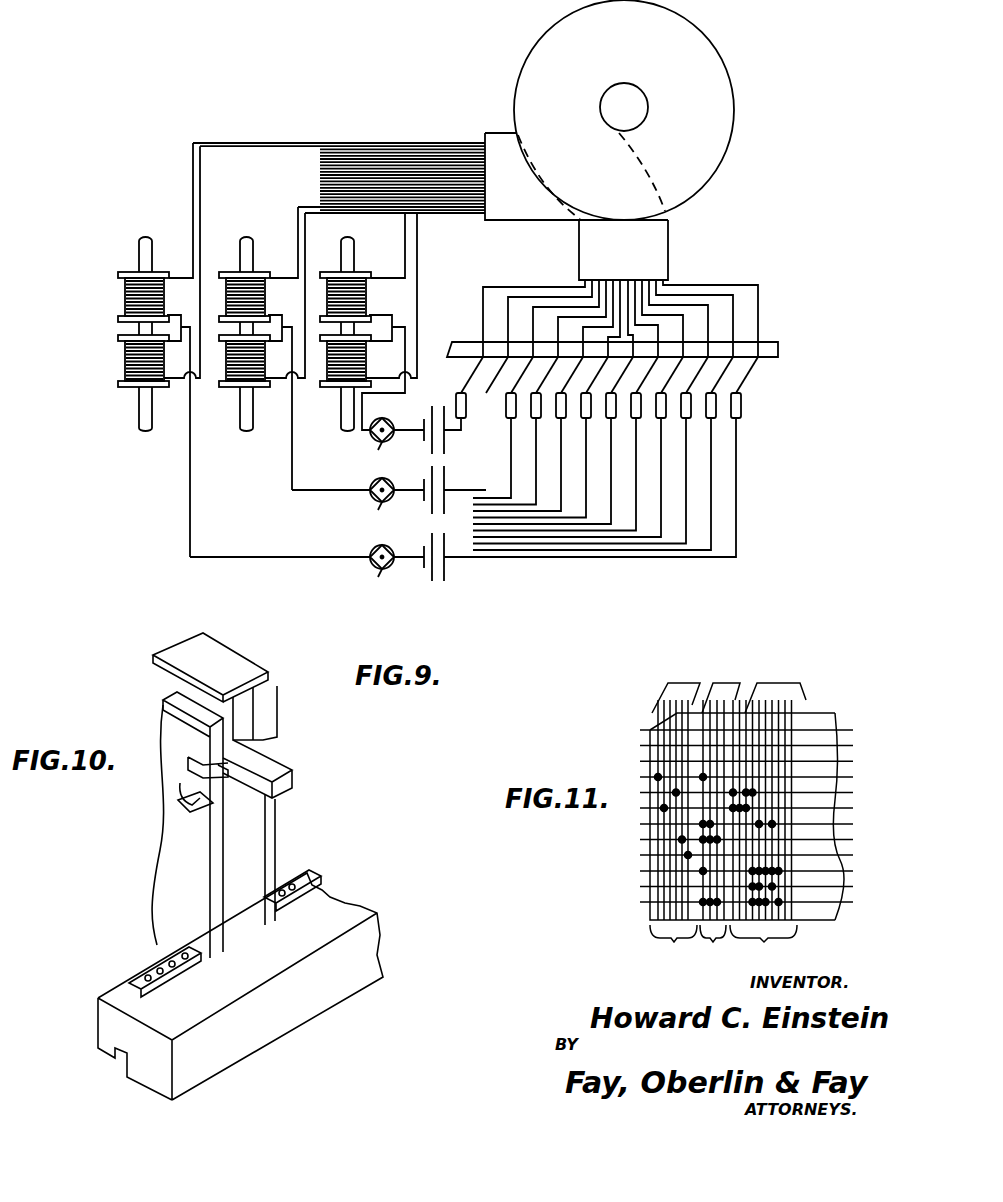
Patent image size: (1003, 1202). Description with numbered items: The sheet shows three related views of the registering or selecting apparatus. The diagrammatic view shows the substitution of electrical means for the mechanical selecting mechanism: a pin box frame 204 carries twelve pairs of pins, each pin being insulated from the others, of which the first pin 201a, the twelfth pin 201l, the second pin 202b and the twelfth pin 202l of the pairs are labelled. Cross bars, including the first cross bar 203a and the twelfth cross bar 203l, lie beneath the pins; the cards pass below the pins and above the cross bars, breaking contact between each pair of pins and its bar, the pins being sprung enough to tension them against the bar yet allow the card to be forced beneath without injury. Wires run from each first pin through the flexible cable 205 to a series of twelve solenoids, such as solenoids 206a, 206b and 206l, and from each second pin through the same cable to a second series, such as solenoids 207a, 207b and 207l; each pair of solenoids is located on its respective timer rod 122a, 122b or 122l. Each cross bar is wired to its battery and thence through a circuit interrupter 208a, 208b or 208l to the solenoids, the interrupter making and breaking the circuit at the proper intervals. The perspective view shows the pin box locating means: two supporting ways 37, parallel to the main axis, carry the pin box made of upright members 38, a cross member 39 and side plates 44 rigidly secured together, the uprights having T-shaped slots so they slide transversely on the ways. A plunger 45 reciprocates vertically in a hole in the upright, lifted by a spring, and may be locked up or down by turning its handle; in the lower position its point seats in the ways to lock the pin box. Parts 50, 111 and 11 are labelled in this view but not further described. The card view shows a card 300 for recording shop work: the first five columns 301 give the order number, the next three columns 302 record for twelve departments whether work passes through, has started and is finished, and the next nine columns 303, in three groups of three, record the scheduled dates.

In FIG. 9, the flexible cable 205 is at (668, 220).
In FIG. 9, the pin box frame 204 is at (778, 350).
In FIG. 9, the pin 201a is at (470, 374).
In FIG. 9, the pin 201l is at (742, 381).
In FIG. 9, the pin 202b is at (480, 392).
In FIG. 9, the pin 202l is at (745, 392).
In FIG. 9, the cross bar 203a is at (458, 403).
In FIG. 9, the cross bar 203l is at (741, 412).
In FIG. 9, the solenoid 206l is at (130, 274).
In FIG. 9, the solenoid 206b is at (233, 272).
In FIG. 9, the solenoid 206a is at (330, 272).
In FIG. 9, the solenoid 207l is at (127, 388).
In FIG. 9, the solenoid 207b is at (222, 385).
In FIG. 9, the solenoid 207a is at (328, 385).
In FIG. 9, the timer rod 122l is at (142, 428).
In FIG. 9, the timer rod 122b is at (244, 430).
In FIG. 9, the timer rod 122a is at (345, 430).
In FIG. 9, the circuit interrupter 208a is at (380, 443).
In FIG. 9, the circuit interrupter 208b is at (380, 503).
In FIG. 9, the circuit interrupter 208l is at (380, 570).
In FIG. 10, the cross member 39 is at (163, 669).
In FIG. 10, the upright member 38 is at (262, 813).
In FIG. 10, the side plate 44 is at (276, 867).
In FIG. 10, the cross bar 50 is at (268, 767).
In FIG. 10, the clip 111 is at (200, 770).
In FIG. 10, the plunger 45 is at (190, 803).
In FIG. 10, the pin 11 is at (205, 806).
In FIG. 10, the supporting way 37 is at (398, 897).
In FIG. 11, the card 300 is at (847, 692).
In FIG. 11, the first five columns 301 is at (673, 943).
In FIG. 11, the department columns 302 is at (719, 943).
In FIG. 11, the date columns 303 is at (763, 943).